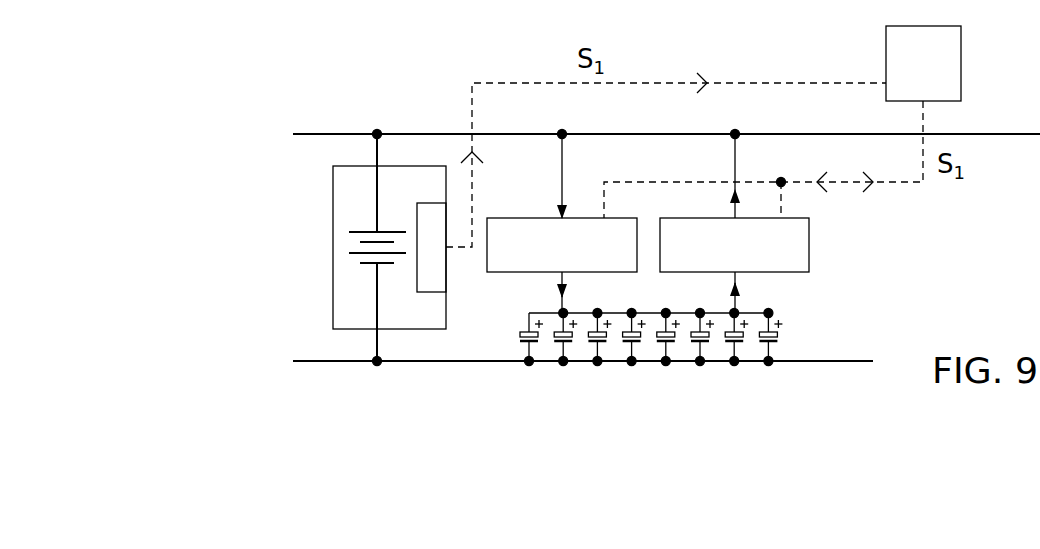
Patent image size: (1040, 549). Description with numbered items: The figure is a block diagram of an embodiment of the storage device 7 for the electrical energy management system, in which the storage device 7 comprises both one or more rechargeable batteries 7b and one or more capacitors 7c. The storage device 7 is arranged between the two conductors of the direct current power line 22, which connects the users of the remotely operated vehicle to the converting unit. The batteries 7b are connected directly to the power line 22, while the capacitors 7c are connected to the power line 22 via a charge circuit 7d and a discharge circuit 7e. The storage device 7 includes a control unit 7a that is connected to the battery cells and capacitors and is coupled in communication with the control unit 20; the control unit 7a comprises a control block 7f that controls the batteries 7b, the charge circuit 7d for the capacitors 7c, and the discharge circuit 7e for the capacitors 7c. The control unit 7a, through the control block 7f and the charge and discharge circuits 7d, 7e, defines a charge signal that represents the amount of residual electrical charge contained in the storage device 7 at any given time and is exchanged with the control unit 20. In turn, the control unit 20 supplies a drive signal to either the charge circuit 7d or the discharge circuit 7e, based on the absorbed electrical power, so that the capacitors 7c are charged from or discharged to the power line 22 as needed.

The direct current power line 22 is at (281, 190).
The storage device 7 is at (275, 242).
The control unit 7a is at (913, 236).
The rechargeable batteries 7b is at (352, 280).
The capacitors 7c is at (793, 338).
The charge circuit 7d is at (546, 259).
The discharge circuit 7e is at (719, 259).
The control block 7f is at (429, 276).
The control unit 20 is at (909, 77).